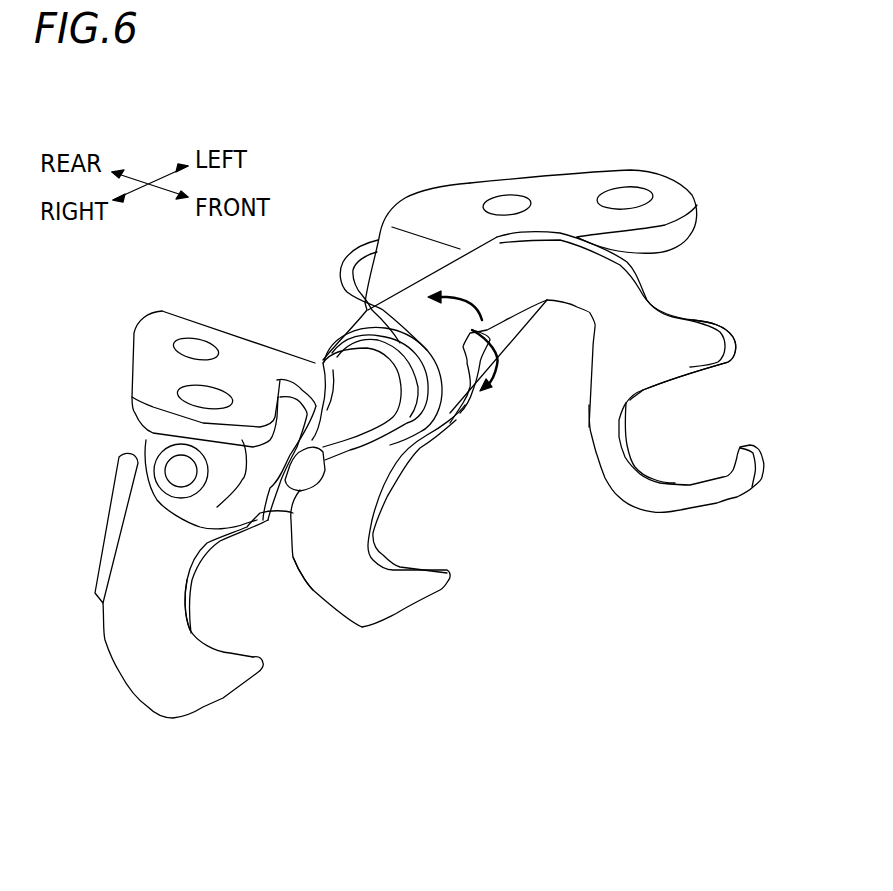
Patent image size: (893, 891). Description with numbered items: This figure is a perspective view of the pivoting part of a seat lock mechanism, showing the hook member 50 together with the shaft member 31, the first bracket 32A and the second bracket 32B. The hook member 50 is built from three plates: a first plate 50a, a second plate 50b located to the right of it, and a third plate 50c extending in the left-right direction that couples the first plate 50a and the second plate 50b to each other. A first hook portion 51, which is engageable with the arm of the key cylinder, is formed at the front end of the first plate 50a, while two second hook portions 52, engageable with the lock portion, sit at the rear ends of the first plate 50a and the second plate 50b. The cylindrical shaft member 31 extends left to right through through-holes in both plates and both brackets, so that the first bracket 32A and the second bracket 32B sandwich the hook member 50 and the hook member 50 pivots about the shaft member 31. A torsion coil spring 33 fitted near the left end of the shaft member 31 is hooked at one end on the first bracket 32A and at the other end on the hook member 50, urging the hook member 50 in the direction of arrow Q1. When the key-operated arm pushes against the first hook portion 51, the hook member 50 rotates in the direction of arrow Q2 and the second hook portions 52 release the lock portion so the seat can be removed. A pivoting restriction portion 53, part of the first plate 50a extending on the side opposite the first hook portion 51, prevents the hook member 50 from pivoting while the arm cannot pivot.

The shaft member 31 is at (347, 390).
The first bracket 32A is at (557, 197).
The second bracket 32B is at (237, 370).
The torsion coil spring 33 is at (388, 310).
The hook member 50 is at (437, 535).
The first plate 50a is at (446, 409).
The second plate 50b is at (165, 553).
The third plate 50c is at (292, 550).
The first hook portion 51 is at (710, 490).
The second hook portion 52 is at (400, 592).
The pivoting restriction portion 53 is at (697, 350).
The arrow Q1 is at (455, 295).
The arrow Q2 is at (498, 367).